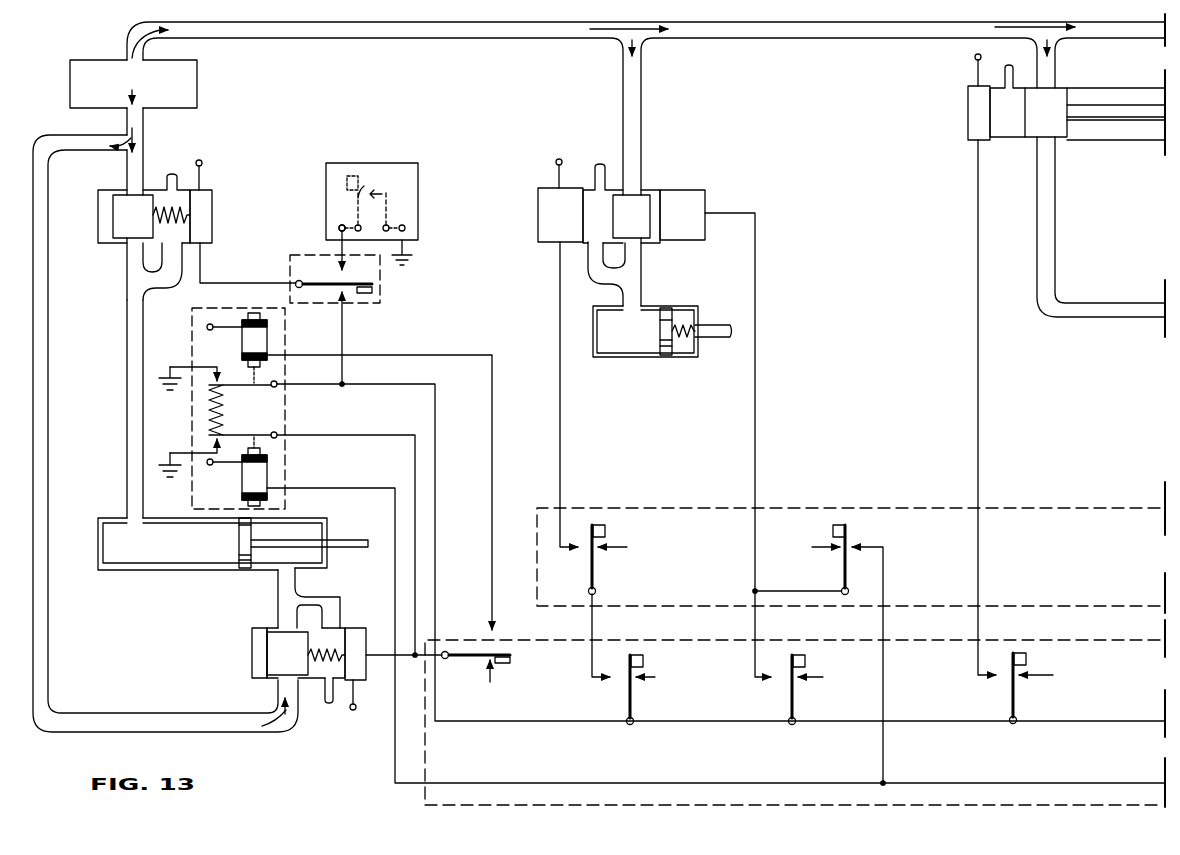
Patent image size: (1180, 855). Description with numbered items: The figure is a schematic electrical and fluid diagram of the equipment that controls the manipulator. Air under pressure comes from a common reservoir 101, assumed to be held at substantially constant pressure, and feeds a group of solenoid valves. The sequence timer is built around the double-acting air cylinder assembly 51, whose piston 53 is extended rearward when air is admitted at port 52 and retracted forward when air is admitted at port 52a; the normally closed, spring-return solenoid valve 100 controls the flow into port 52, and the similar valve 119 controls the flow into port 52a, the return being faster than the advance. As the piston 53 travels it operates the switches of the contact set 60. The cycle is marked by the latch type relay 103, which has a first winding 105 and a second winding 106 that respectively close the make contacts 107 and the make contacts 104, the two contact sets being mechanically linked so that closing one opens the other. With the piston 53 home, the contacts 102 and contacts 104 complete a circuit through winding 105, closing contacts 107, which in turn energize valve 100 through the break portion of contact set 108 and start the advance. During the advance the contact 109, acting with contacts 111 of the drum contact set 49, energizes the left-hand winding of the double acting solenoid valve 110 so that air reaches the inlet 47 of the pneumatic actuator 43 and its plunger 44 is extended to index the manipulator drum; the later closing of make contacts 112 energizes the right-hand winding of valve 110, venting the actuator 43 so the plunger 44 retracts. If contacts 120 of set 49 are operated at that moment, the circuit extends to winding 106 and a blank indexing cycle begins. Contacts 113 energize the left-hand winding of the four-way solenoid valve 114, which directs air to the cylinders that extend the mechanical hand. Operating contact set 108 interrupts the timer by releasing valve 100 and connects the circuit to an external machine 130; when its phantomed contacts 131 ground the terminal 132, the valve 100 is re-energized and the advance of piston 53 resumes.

The solenoid valve 100 is at (98, 211).
The reservoir 101 is at (197, 93).
The contacts 102 is at (503, 665).
The latch type relay 103 is at (192, 313).
The make contacts 104 is at (238, 435).
The first winding 105 is at (242, 340).
The second winding 106 is at (242, 482).
The make contacts 107 is at (260, 387).
The contact set 108 is at (374, 283).
The contact 109 is at (643, 660).
The double acting solenoid valve 110 is at (697, 240).
The contacts 111 is at (605, 531).
The make contacts 112 is at (805, 661).
The contacts 113 is at (1026, 658).
The four-way solenoid valve 114 is at (968, 126).
The solenoid valve 119 is at (252, 660).
The contacts 120 is at (833, 529).
The external machine 130 is at (418, 236).
The phantomed contacts 131 is at (373, 183).
The terminal 132 is at (339, 228).
The pneumatic actuator 43 is at (630, 357).
The plunger 44 is at (726, 338).
The inlet 47 is at (648, 292).
The drum contact set 49 is at (845, 508).
The air cylinder assembly 51 is at (190, 580).
The port 52 is at (126, 512).
The port 52a is at (278, 588).
The piston 53 is at (362, 520).
The contact set 60 is at (380, 297).